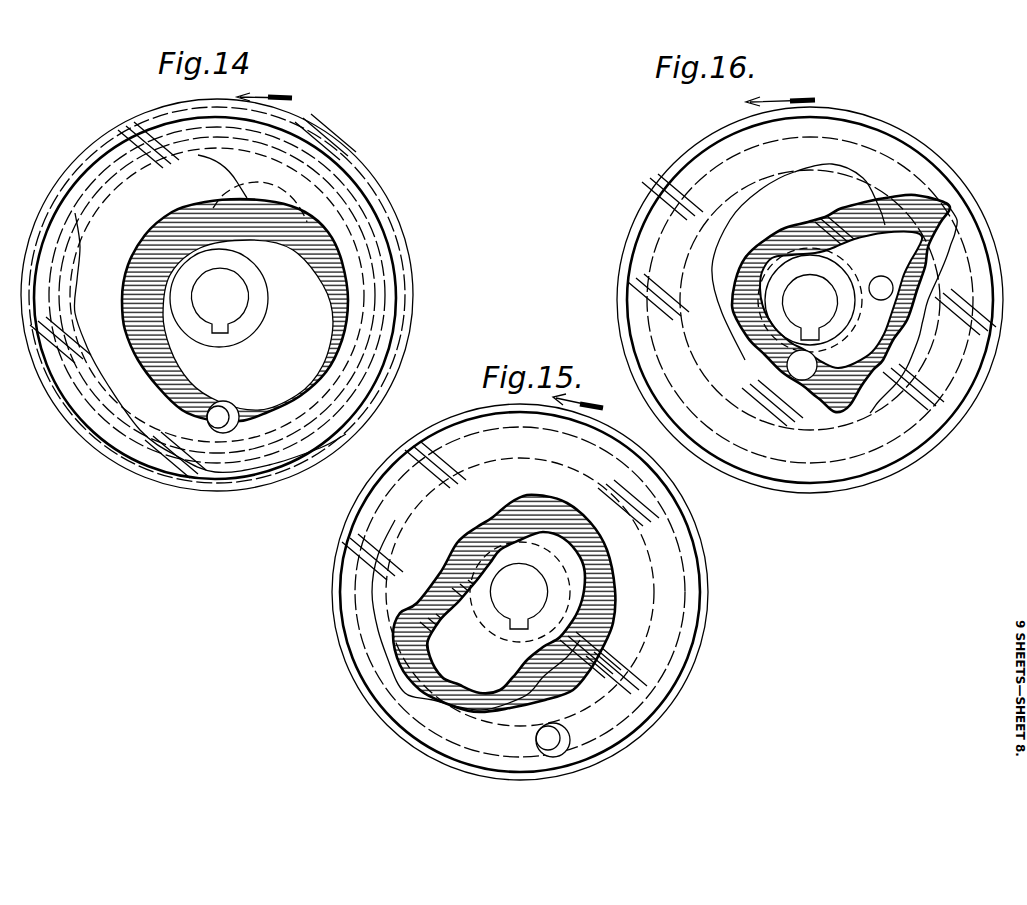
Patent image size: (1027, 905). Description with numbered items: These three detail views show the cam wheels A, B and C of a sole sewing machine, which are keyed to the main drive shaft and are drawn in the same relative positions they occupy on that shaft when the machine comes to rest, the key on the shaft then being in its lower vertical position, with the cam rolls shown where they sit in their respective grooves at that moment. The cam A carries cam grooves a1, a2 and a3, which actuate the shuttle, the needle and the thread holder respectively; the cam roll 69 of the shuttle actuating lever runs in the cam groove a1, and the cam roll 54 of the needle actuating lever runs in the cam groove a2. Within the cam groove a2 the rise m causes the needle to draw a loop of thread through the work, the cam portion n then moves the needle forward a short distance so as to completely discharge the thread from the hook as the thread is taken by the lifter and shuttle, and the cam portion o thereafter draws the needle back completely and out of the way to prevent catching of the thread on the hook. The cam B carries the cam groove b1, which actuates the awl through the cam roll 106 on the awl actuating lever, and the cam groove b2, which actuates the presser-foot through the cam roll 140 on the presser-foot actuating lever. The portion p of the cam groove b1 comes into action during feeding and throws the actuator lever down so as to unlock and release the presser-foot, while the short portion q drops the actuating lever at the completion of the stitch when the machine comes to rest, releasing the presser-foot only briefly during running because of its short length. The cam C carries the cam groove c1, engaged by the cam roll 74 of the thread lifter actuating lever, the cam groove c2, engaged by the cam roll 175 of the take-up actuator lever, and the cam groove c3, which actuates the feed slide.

In FIG. 14, the cam wheel a is at (329, 135).
In FIG. 14, the cam groove a3 is at (271, 127).
In FIG. 14, the cam groove a2 is at (329, 222).
In FIG. 14, the cam groove a1 is at (357, 340).
In FIG. 14, the rise of cam groove m is at (238, 181).
In FIG. 14, the cam portion n is at (322, 253).
In FIG. 14, the cam portion o is at (302, 381).
In FIG. 14, the cam roll 69 is at (236, 425).
In FIG. 14, the cam roll 54 is at (206, 420).
In FIG. 15, the cam wheel B is at (708, 622).
In FIG. 15, the cam groove b2 is at (665, 650).
In FIG. 15, the portion of cam groove p is at (408, 712).
In FIG. 15, the cam groove b1 is at (612, 578).
In FIG. 15, the cam roll 106 is at (555, 670).
In FIG. 15, the cam roll 140 is at (570, 742).
In FIG. 15, the short portion of cam groove q is at (558, 750).
In FIG. 16, the cam wheel C is at (840, 482).
In FIG. 16, the cam groove c3 is at (833, 141).
In FIG. 16, the cam groove c2 is at (879, 174).
In FIG. 16, the cam groove c1 is at (943, 247).
In FIG. 16, the cam roll 175 is at (884, 298).
In FIG. 16, the cam roll 74 is at (803, 380).